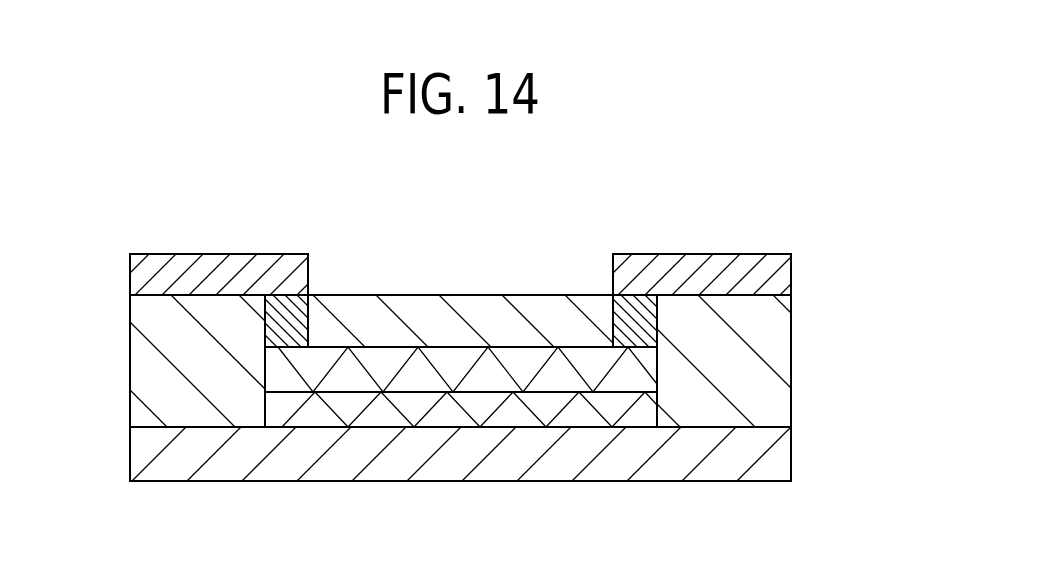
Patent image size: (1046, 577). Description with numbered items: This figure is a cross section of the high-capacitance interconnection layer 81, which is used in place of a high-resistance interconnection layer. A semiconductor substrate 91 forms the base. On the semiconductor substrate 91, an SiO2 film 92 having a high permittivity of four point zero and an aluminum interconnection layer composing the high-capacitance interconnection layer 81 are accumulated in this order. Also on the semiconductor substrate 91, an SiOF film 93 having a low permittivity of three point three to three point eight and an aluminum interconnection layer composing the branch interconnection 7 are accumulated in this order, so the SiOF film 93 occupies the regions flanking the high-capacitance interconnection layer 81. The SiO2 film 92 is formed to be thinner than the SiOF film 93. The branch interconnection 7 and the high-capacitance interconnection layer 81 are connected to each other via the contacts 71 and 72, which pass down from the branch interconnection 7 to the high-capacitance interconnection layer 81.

The branch interconnection 7 is at (204, 254).
The contact 71 is at (613, 337).
The contact 72 is at (308, 327).
The high-capacitance interconnection layer 81 is at (657, 377).
The semiconductor substrate 91 is at (791, 452).
The SiO2 film 92 is at (265, 413).
The SiOF film 93 is at (791, 354).